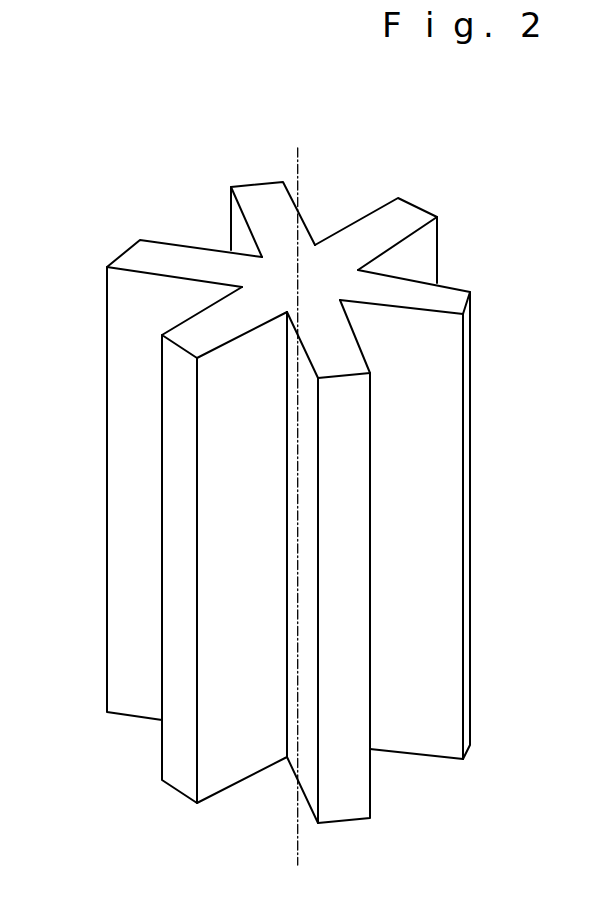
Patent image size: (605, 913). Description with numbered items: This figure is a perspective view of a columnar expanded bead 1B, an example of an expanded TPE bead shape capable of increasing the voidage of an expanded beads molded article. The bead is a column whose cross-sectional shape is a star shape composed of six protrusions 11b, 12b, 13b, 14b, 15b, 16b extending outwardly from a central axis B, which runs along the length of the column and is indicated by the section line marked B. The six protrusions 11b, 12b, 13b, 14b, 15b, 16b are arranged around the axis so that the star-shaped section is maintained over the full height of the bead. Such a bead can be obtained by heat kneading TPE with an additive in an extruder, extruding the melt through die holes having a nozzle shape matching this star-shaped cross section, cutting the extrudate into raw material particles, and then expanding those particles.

The columnar expanded bead 1B is at (488, 178).
The protrusion 11b is at (400, 213).
The protrusion 12b is at (442, 303).
The protrusion 13b is at (337, 362).
The protrusion 14b is at (197, 337).
The protrusion 15b is at (152, 258).
The protrusion 16b is at (263, 197).